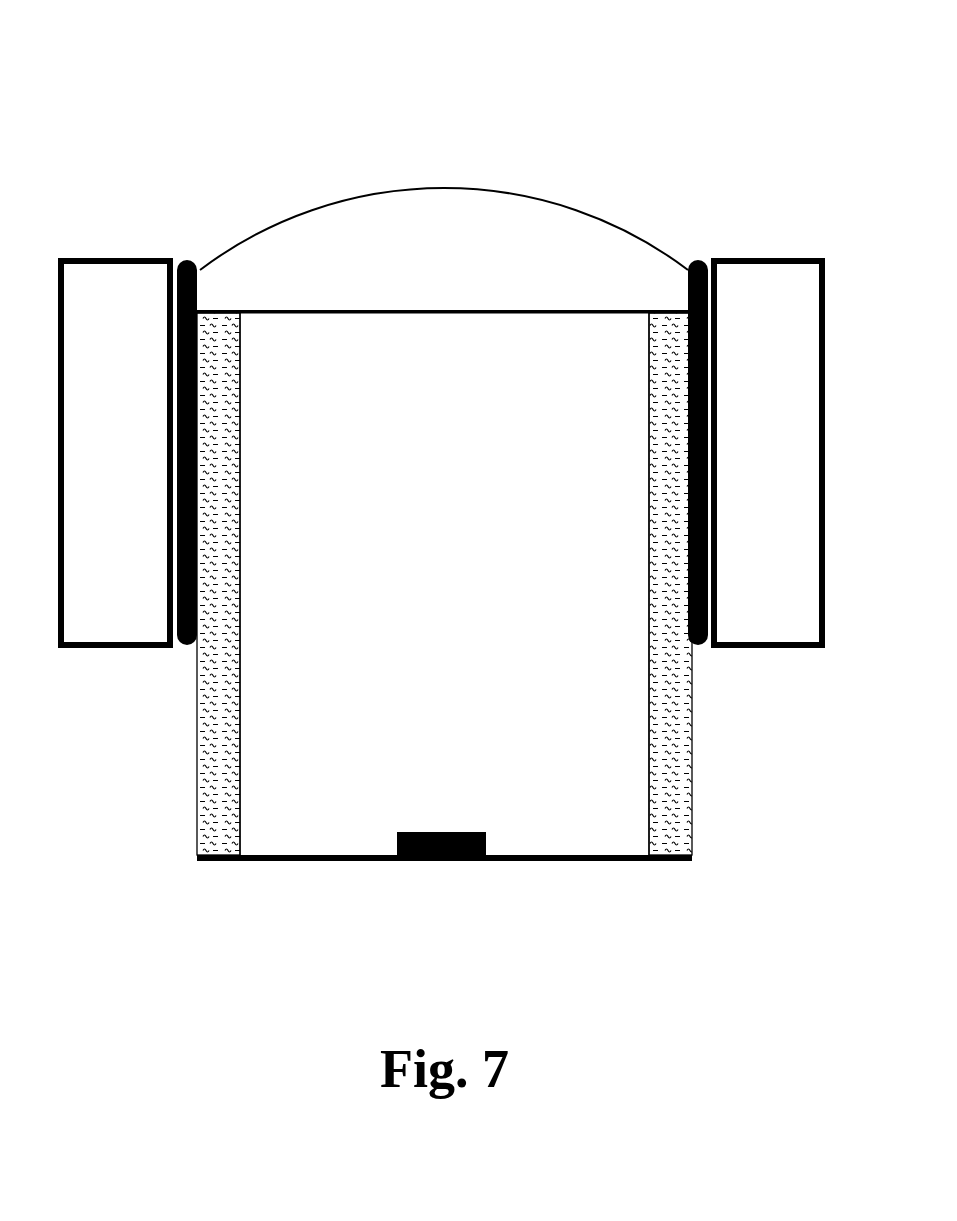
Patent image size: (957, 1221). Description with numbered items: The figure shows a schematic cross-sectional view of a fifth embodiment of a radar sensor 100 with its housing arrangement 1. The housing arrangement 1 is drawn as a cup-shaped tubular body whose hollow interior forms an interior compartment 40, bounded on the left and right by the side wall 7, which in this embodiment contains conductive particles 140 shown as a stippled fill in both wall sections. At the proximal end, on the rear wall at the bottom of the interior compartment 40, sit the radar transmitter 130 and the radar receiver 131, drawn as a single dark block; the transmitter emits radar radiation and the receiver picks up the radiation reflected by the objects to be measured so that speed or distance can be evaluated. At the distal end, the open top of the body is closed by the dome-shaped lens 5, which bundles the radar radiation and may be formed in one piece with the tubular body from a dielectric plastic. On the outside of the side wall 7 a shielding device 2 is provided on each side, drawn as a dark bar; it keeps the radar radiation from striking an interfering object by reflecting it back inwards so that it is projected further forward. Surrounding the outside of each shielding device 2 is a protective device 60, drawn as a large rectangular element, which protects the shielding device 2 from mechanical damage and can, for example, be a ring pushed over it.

The radar sensor 100 is at (748, 117).
The housing arrangement 1 is at (164, 236).
The lens 5 is at (365, 235).
The shielding device 2 is at (186, 646).
The protective device 60 is at (107, 296).
The side wall 7 is at (197, 783).
The conductive particles 140 is at (682, 800).
The interior compartment 40 is at (614, 827).
The radar transmitter 130 is at (478, 860).
The radar receiver 131 is at (441, 845).